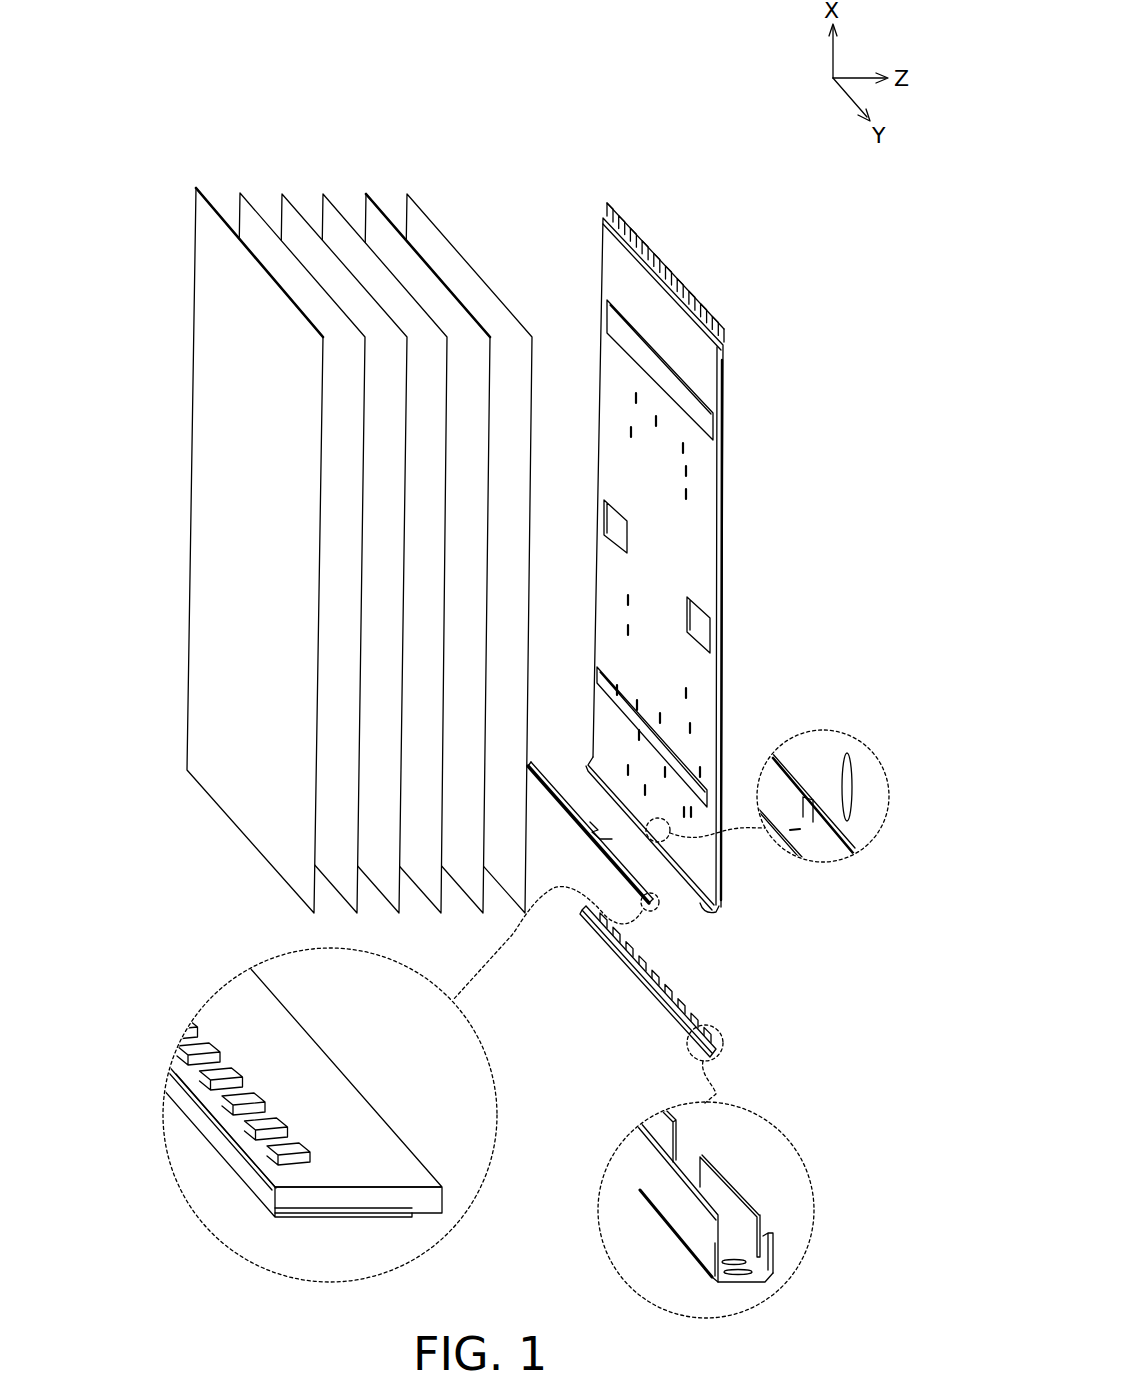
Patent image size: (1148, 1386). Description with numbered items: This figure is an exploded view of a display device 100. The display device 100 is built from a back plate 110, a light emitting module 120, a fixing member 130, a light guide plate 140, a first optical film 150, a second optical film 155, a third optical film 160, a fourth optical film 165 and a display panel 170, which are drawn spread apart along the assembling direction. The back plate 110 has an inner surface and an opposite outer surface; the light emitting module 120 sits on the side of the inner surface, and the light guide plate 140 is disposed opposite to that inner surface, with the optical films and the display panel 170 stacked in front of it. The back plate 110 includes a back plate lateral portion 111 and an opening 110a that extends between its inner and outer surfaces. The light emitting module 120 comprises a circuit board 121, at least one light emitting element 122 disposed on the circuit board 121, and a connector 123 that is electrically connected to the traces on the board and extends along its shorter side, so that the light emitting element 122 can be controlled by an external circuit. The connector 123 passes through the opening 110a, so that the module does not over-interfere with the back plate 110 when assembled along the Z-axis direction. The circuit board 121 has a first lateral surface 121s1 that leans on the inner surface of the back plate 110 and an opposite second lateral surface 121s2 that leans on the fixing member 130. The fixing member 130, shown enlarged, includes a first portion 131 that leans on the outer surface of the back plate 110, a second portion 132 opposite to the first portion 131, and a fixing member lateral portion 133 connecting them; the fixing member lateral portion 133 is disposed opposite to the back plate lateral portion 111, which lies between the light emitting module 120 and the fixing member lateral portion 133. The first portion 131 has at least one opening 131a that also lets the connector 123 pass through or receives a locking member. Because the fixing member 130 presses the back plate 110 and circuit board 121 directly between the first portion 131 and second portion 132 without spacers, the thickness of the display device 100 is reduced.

The display device 100 is at (210, 56).
The back plate 110 is at (727, 405).
The opening 110a is at (807, 826).
The back plate lateral portion 111 is at (708, 906).
The light emitting module 120 is at (548, 752).
The circuit board 121 is at (359, 1203).
The first lateral surface 121s1 is at (444, 1200).
The second lateral surface 121s2 is at (268, 1189).
The light emitting element 122 is at (262, 1123).
The connector 123 is at (599, 817).
The fixing member 130 is at (870, 1163).
The first portion 131 is at (733, 1203).
The opening 131a is at (687, 1153).
The second portion 132 is at (692, 1228).
The fixing member lateral portion 133 is at (733, 1247).
The light guide plate 140 is at (377, 221).
The first optical film 150 is at (445, 244).
The second optical film 155 is at (335, 216).
The third optical film 160 is at (293, 214).
The fourth optical film 165 is at (251, 211).
The display panel 170 is at (207, 213).